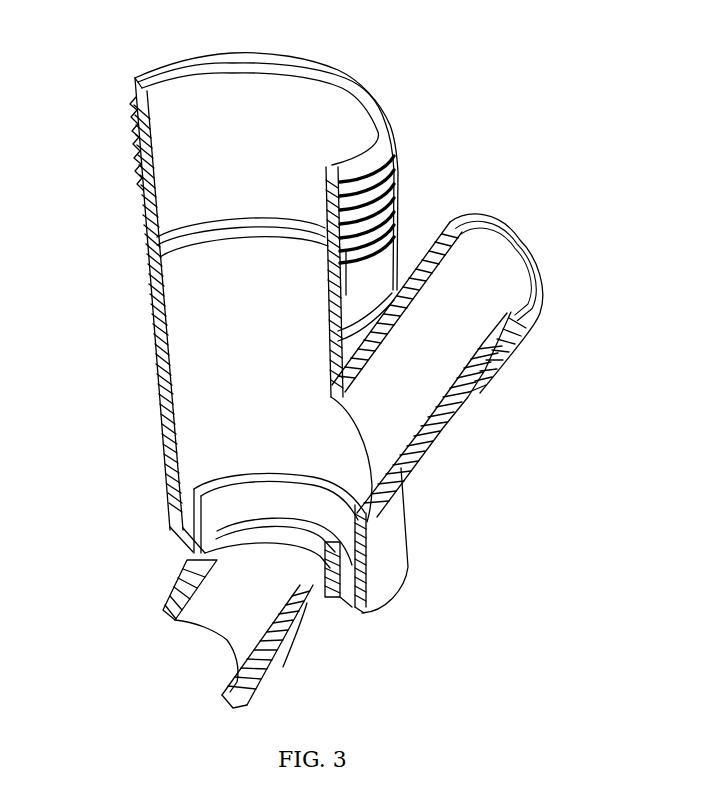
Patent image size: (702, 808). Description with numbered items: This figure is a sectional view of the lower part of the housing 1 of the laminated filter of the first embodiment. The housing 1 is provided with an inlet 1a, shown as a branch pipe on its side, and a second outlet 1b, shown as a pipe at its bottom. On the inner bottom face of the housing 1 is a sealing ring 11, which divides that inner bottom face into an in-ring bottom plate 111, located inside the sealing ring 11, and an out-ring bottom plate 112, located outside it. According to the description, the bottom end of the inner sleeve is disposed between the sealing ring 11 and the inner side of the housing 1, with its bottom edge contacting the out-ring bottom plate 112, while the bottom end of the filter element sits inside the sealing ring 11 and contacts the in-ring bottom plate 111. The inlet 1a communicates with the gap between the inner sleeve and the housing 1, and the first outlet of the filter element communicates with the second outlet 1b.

The housing 1 is at (215, 378).
The inlet 1a is at (468, 272).
The second outlet 1b is at (248, 608).
The sealing ring 11 is at (222, 497).
The in-ring bottom plate 111 is at (380, 565).
The out-ring bottom plate 112 is at (187, 537).